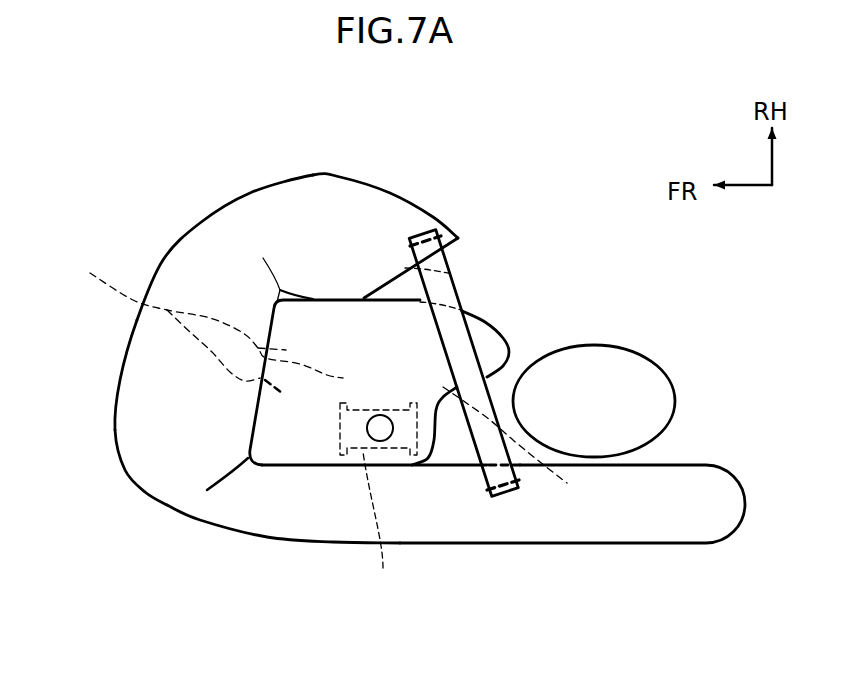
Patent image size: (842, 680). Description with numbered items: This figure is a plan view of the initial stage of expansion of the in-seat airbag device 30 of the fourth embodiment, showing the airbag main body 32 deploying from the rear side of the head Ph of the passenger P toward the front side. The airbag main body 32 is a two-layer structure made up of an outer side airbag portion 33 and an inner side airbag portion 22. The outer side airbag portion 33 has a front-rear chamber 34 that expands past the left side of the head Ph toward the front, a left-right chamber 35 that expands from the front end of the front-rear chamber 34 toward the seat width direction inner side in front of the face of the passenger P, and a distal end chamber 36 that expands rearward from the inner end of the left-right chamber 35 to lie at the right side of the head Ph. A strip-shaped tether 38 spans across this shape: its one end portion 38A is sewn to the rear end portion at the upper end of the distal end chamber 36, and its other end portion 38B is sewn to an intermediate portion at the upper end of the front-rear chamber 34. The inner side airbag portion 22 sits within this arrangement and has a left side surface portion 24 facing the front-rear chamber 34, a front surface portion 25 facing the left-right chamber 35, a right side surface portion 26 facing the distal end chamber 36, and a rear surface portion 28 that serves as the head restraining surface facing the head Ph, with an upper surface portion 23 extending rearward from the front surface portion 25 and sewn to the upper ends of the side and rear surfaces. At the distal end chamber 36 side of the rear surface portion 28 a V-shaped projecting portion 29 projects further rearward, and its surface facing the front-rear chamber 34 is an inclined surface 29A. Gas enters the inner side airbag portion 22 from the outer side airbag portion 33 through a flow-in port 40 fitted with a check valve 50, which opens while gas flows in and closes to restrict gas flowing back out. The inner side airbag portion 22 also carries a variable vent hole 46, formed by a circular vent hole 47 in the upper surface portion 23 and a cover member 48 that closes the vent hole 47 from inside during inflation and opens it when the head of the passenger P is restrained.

The inner side airbag portion 22 is at (363, 312).
The upper surface portion 23 is at (280, 448).
The left side surface portion 24 is at (285, 450).
The front surface portion 25 is at (246, 457).
The right side surface portion 26 is at (297, 300).
The rear surface portion 28 is at (437, 430).
The projecting portion 29 is at (508, 347).
The inclined surface 29A is at (518, 452).
The airbag device 30 is at (153, 547).
The airbag main body 32 is at (118, 473).
The outer side airbag portion 33 is at (159, 259).
The front-rear chamber 34 is at (648, 527).
The left-right chamber 35 is at (133, 375).
The distal end chamber 36 is at (406, 208).
The tether 38 is at (433, 330).
The one end portion of the tether 38A is at (423, 229).
The another end portion of the tether 38B is at (504, 489).
The flow-in port 40 is at (380, 498).
The variable vent hole 46 is at (337, 428).
The vent hole 47 is at (380, 441).
The cover member 48 is at (379, 525).
The check valve 50 is at (208, 322).
The passenger P is at (660, 356).
The head of the passenger Ph is at (655, 410).